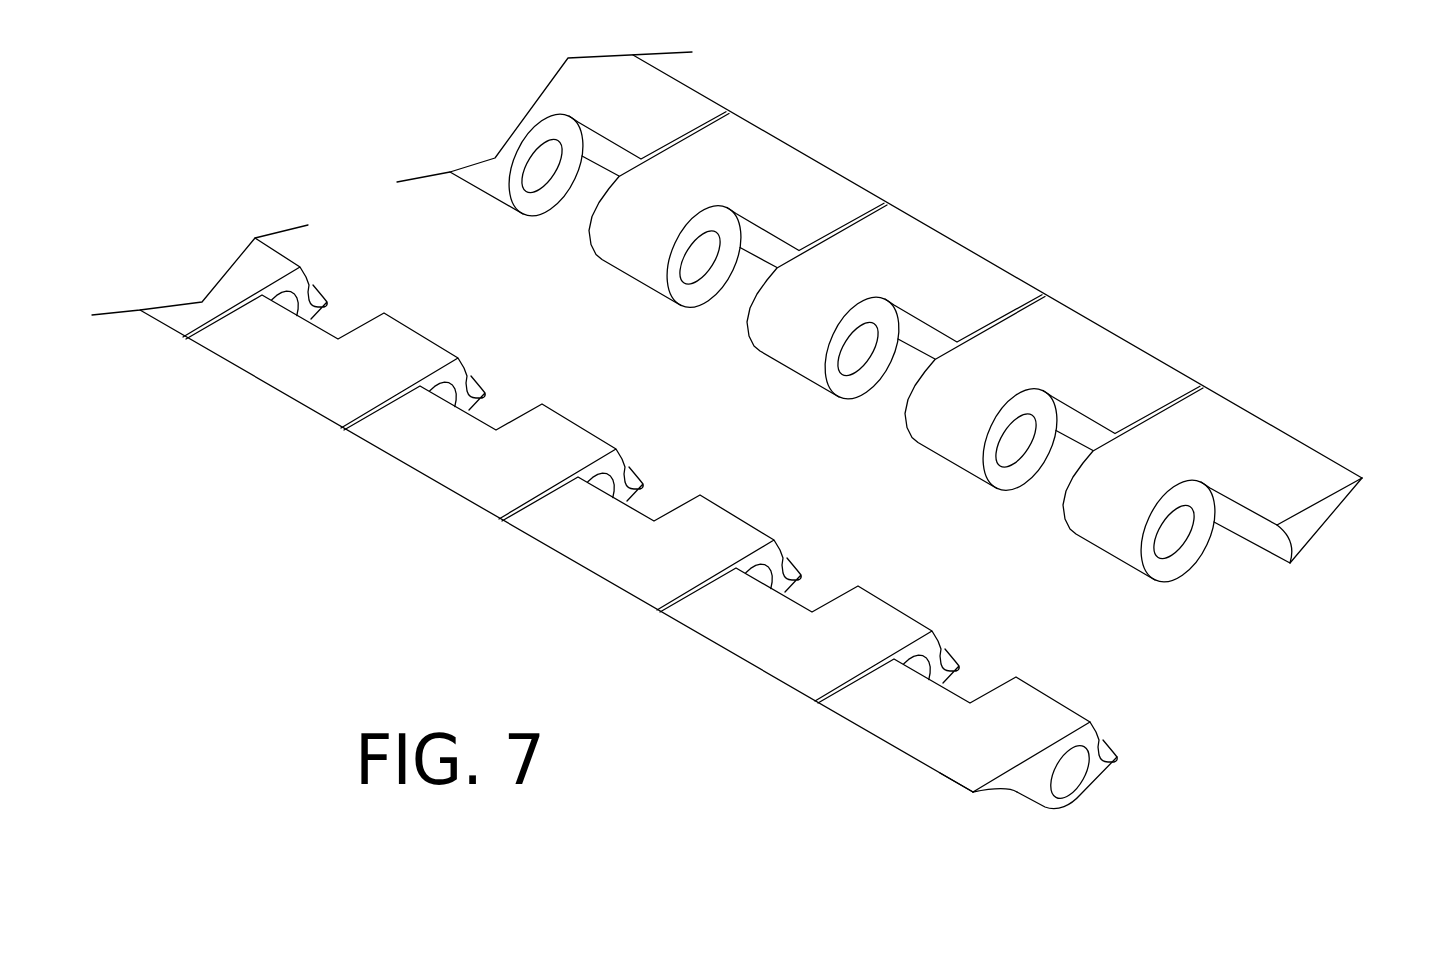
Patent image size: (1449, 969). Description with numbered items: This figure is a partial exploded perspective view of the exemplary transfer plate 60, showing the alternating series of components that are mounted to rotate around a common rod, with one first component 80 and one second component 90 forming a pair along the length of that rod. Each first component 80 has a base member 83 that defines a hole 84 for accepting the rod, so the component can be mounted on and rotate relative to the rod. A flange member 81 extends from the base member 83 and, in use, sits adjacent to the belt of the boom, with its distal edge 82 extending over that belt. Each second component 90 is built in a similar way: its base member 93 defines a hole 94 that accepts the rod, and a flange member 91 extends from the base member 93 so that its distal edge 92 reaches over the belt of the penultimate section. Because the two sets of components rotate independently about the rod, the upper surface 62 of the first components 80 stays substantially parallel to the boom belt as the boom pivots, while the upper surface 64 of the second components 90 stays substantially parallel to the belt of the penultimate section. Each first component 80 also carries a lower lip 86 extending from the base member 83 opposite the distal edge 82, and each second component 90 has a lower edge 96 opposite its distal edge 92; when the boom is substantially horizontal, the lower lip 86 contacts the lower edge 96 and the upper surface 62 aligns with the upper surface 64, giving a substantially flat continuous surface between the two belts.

The transfer plate 60 is at (1254, 153).
The upper surface 62 is at (963, 757).
The upper surface 64 is at (1194, 455).
The first component 80 is at (272, 386).
The flange member 81 is at (1008, 793).
The distal edge 82 is at (968, 795).
The base member 83 is at (1000, 683).
The hole 84 is at (1090, 797).
The lower lip 86 is at (1117, 757).
The second component 90 is at (693, 88).
The flange member 91 is at (1333, 513).
The distal edge 92 is at (1368, 474).
The base member 93 is at (1110, 557).
The hole 94 is at (1167, 555).
The lower edge 96 is at (1268, 560).